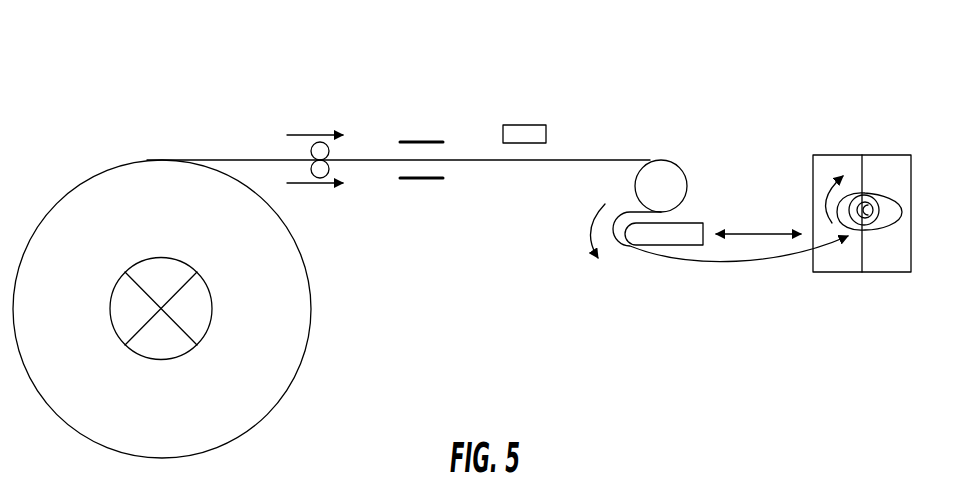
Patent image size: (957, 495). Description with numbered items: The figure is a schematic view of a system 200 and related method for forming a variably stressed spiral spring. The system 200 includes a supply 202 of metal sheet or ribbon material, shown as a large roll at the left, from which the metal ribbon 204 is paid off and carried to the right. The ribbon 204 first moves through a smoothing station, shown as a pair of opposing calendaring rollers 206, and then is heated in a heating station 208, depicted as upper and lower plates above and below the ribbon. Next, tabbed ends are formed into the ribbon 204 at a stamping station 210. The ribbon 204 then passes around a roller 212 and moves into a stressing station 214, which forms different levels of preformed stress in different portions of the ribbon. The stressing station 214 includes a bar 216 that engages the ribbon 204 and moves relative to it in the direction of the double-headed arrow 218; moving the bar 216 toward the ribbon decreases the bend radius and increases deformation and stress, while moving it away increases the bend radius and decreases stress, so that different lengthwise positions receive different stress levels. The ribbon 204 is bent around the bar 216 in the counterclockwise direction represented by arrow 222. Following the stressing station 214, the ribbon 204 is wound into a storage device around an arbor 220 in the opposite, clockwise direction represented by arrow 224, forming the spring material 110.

The spring material 110 is at (868, 225).
The system 200 is at (704, 92).
The supply 202 is at (268, 370).
The metal ribbon 204 is at (245, 158).
The opposing calendaring rollers 206 is at (318, 205).
The heating station 208 is at (422, 196).
The stamping station 210 is at (536, 92).
The roller 212 is at (677, 182).
The stressing station 214 is at (604, 277).
The bar 216 is at (677, 232).
The arrow 218 is at (757, 236).
The arbor 220 is at (867, 206).
The arrow 222 is at (588, 227).
The arrow 224 is at (826, 192).